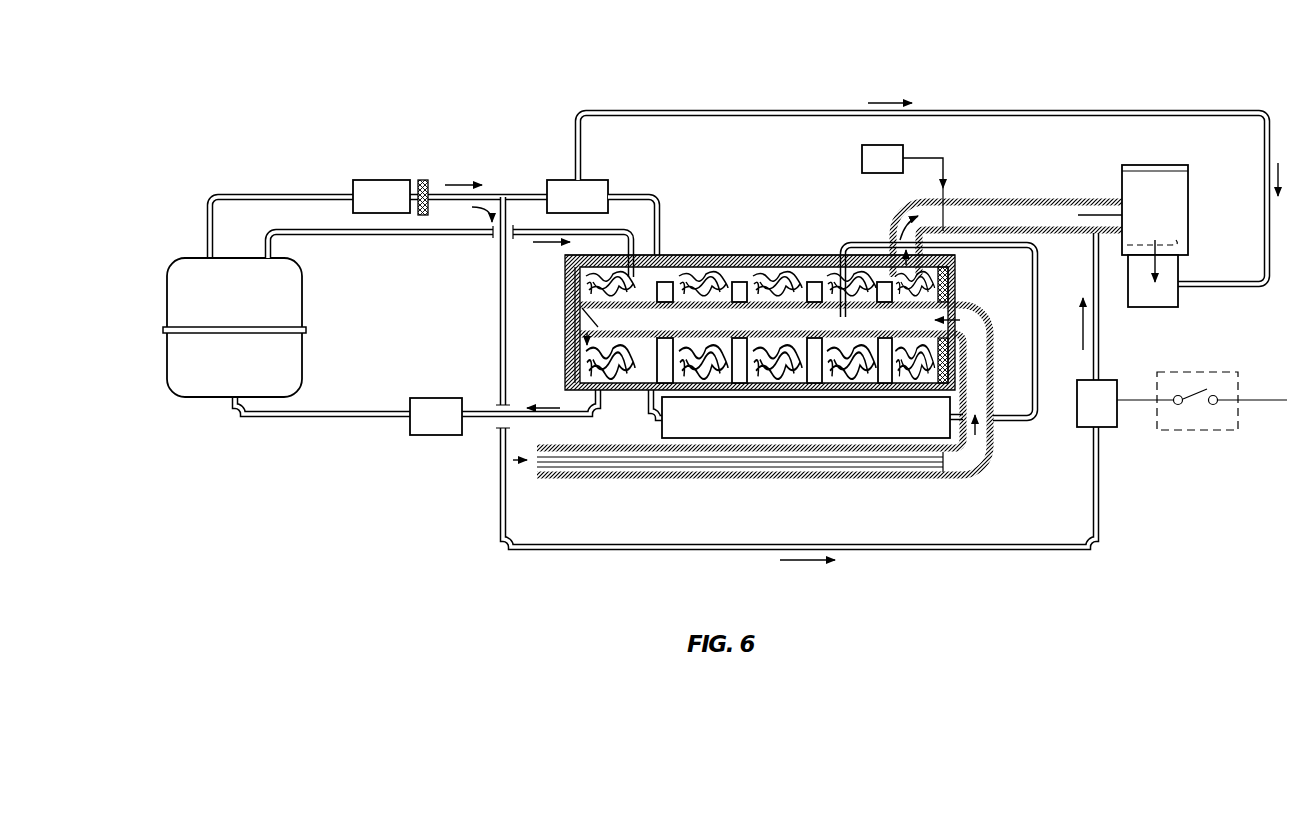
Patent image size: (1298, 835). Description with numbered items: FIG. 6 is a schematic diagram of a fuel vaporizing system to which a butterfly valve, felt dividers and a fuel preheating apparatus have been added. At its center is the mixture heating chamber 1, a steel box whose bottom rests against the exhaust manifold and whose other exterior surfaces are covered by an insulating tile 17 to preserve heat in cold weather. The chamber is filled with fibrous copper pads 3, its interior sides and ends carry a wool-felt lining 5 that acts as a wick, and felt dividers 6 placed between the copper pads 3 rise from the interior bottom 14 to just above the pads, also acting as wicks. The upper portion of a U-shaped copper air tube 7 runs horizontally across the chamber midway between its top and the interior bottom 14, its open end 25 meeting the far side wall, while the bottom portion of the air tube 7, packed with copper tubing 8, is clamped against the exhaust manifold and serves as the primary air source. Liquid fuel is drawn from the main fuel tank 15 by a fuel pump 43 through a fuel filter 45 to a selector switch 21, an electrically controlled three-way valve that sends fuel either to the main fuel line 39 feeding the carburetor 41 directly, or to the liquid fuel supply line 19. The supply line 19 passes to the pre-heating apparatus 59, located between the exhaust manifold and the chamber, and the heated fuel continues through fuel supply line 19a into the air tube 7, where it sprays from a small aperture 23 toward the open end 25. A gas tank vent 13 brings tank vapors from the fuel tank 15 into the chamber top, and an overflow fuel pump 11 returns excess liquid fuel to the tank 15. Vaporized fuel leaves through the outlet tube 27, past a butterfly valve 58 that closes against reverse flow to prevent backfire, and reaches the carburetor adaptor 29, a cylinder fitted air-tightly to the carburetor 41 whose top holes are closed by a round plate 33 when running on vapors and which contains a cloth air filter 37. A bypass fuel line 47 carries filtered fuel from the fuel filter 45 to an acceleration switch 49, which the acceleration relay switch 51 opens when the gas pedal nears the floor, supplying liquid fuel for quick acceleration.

The mixture heating chamber 1 is at (778, 259).
The fibrous copper pads 3 is at (566, 291).
The wool-felt lining 5 is at (958, 283).
The felt dividers 6 is at (802, 282).
The U-shaped copper air tube 7 is at (993, 360).
The copper tubing 8 is at (850, 478).
The overflow fuel pump 11 is at (426, 398).
The gas tank vent 13 is at (426, 238).
The interior bottom 14 is at (700, 384).
The main fuel tank 15 is at (292, 297).
The insulating tile 17 is at (735, 256).
The liquid fuel supply line 19 is at (657, 212).
The fuel supply line 19a is at (1038, 285).
The selector switch 21 is at (557, 180).
The aperture 23 is at (840, 318).
The open end of air tube 25 is at (566, 329).
The outlet tube 27 is at (980, 199).
The carburetor adaptor 29 is at (1188, 195).
The round plate 33 is at (1165, 165).
The cloth air filter 37 is at (1180, 245).
The main fuel line 39 is at (984, 110).
The carburetor 41 is at (1178, 298).
The fuel pump 43 is at (380, 183).
The fuel filter 45 is at (428, 180).
The bypass fuel line 47 is at (703, 544).
The acceleration switch 49 is at (1110, 380).
The acceleration relay switch 51 is at (1200, 372).
The butterfly valve 58 is at (862, 158).
The pre-heating apparatus 59 is at (814, 429).